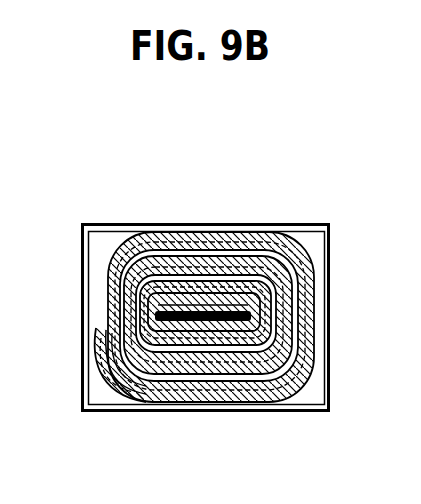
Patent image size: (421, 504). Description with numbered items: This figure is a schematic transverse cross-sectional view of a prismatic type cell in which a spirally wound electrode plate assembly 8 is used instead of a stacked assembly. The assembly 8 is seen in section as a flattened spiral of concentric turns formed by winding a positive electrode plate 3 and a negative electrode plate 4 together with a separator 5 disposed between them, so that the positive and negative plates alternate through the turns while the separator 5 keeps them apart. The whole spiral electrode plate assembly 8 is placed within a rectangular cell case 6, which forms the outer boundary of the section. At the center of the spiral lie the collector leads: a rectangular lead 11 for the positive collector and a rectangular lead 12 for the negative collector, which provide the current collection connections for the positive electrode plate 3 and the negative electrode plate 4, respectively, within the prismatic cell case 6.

The positive electrode plate 3 is at (142, 357).
The negative electrode plate 4 is at (90, 350).
The separator 5 is at (110, 363).
The cell case 6 is at (263, 223).
The electrode plate assembly 8 is at (300, 250).
The rectangular lead for a positive collector 11 is at (168, 295).
The rectangular lead for a negative collector 12 is at (225, 318).